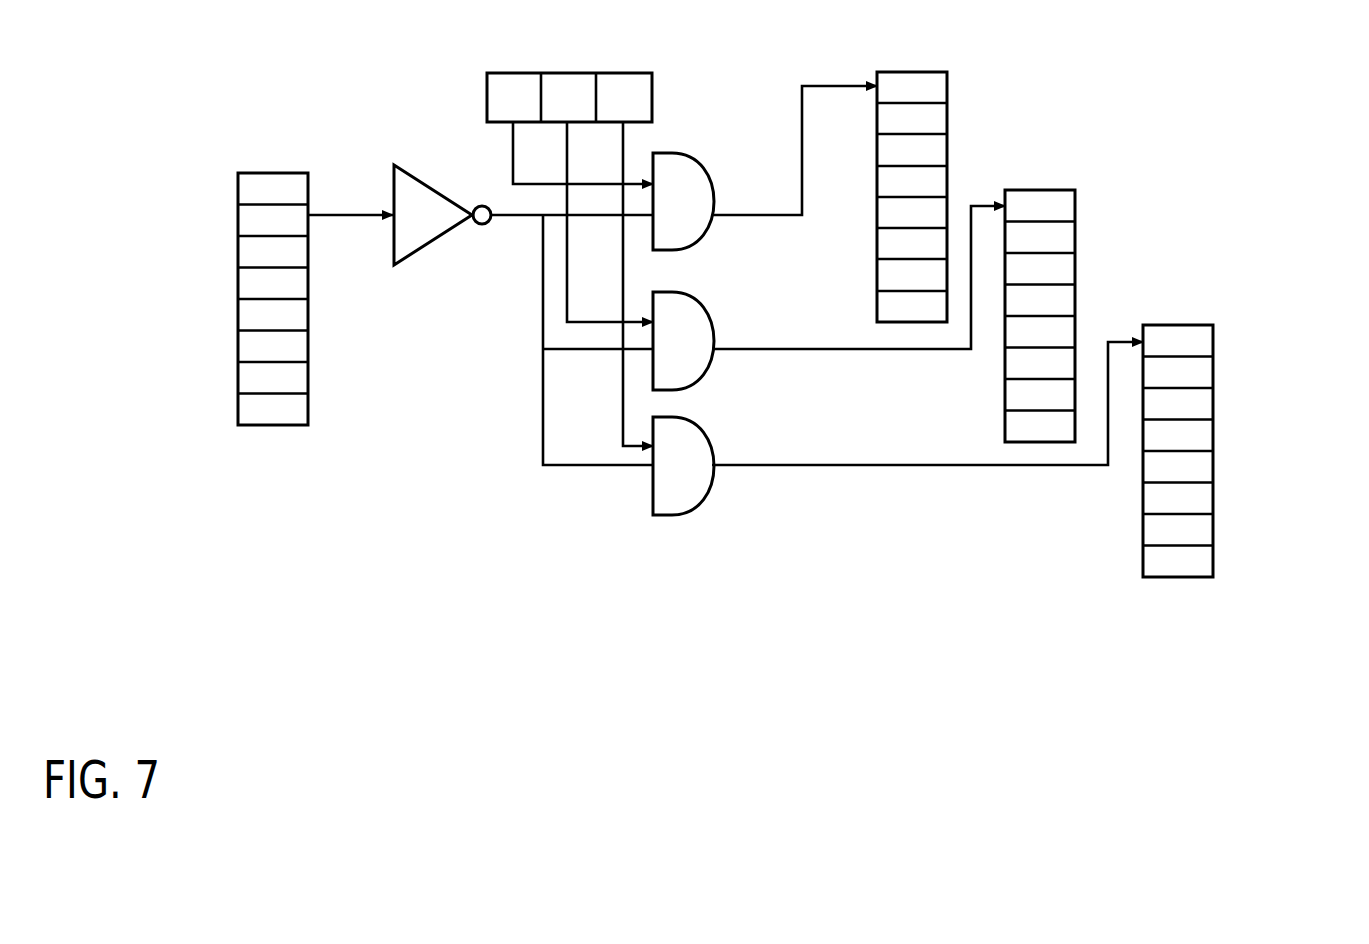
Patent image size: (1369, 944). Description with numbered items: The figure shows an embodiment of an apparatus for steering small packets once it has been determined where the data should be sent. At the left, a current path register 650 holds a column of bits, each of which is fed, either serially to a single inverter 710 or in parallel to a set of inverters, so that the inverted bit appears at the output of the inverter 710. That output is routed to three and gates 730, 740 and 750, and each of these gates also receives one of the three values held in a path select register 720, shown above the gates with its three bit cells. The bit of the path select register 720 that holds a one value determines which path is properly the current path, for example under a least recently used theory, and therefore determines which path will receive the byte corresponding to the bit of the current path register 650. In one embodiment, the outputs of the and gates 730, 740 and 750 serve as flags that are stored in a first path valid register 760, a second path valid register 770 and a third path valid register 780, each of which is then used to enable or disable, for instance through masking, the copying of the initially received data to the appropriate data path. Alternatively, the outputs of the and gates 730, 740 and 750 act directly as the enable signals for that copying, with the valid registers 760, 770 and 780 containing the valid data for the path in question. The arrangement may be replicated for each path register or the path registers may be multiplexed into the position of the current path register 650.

The current path register 650 is at (278, 335).
The inverter 710 is at (430, 247).
The path select register 720 is at (624, 76).
The AND gate 730 is at (706, 172).
The AND gate 740 is at (706, 311).
The AND gate 750 is at (706, 434).
The path 1 valid register 760 is at (988, 196).
The path 2 valid register 770 is at (1114, 316).
The path 3 valid register 780 is at (1253, 451).